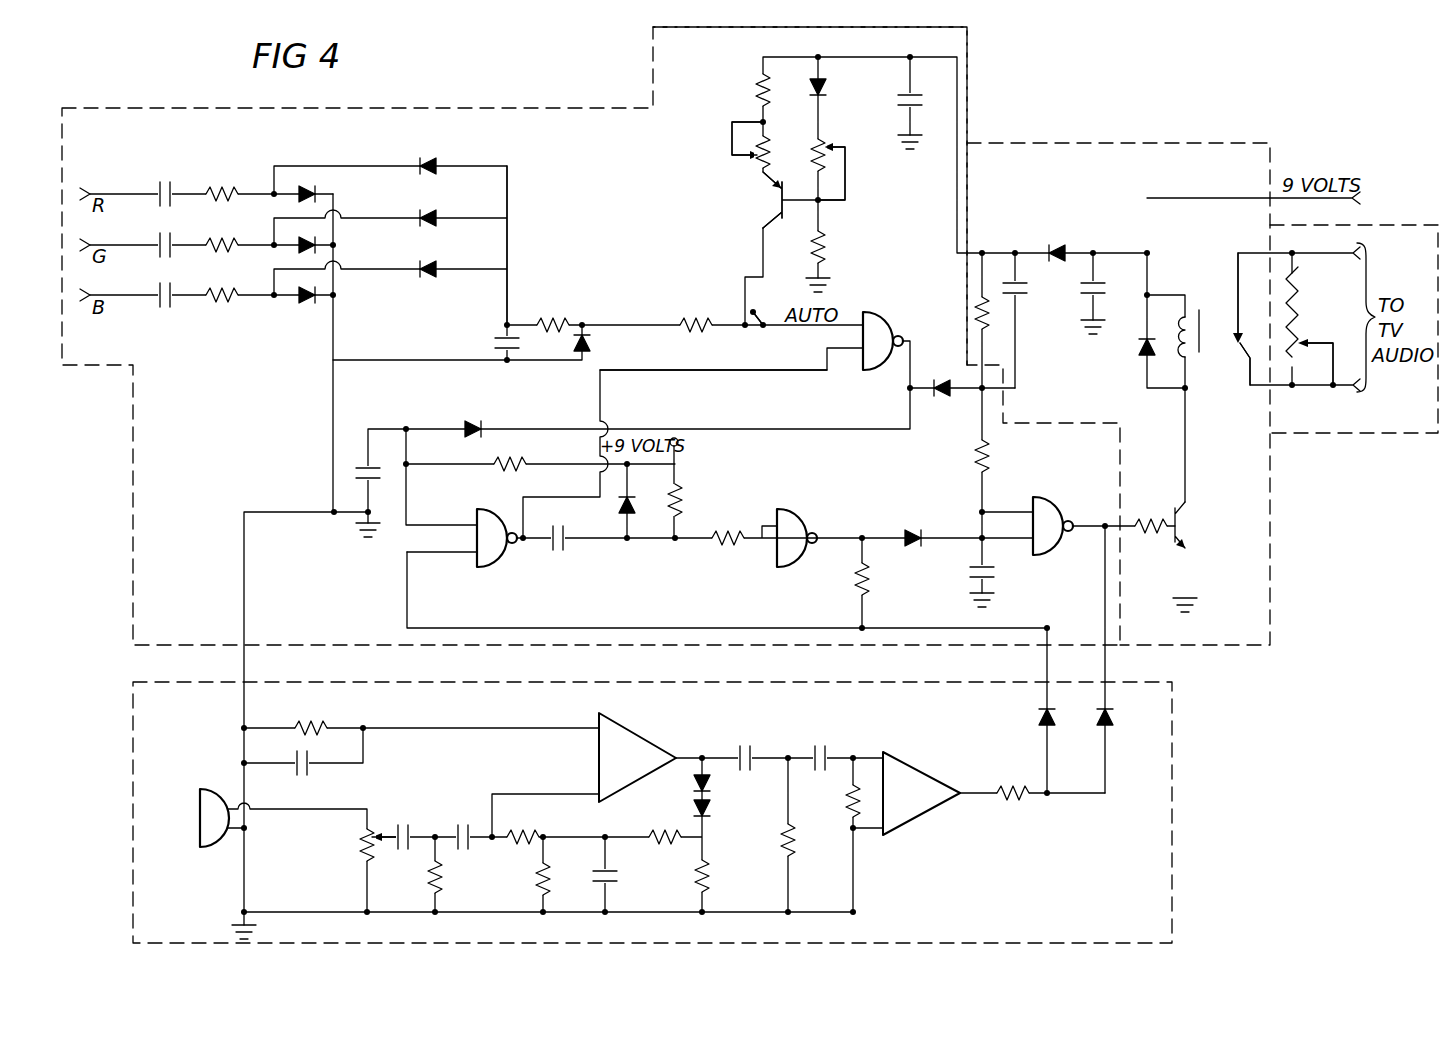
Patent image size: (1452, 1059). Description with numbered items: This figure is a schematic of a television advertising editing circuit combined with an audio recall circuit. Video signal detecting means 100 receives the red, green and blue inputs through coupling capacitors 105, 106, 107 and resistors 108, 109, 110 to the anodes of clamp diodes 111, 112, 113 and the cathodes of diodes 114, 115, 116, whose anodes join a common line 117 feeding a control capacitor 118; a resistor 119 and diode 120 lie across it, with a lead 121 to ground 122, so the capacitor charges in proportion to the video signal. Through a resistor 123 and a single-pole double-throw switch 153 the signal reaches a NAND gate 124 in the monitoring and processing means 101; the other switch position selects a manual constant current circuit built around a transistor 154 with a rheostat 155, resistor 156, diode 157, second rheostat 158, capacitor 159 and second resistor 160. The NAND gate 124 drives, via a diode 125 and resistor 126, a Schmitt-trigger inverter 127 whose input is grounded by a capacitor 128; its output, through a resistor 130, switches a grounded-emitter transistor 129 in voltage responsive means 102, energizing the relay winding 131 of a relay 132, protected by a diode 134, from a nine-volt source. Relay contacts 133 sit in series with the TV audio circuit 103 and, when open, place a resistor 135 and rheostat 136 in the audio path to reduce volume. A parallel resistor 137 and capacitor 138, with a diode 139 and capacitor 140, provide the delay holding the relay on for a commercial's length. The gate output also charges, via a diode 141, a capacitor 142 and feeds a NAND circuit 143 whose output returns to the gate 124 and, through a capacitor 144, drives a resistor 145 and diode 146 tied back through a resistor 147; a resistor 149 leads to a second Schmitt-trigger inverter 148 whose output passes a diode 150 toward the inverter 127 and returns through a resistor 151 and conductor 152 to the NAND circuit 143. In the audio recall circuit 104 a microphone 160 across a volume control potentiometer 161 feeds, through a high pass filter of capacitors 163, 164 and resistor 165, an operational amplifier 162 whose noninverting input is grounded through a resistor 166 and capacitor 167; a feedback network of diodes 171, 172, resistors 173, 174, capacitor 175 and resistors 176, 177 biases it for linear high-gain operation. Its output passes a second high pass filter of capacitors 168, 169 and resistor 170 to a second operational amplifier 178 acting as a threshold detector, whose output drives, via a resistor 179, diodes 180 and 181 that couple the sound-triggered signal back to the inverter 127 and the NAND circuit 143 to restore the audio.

The video signal detecting means 100 is at (452, 108).
The video signal monitoring and signal processing means 101 is at (968, 60).
The voltage responsive means 102 is at (1180, 140).
The TV audio circuit 103 is at (1322, 436).
The audio recall circuit 104 is at (1172, 785).
The coupling capacitor 105 is at (165, 180).
The coupling capacitor 106 is at (205, 225).
The coupling capacitor 107 is at (170, 290).
The resistor 108 is at (236, 183).
The resistor 109 is at (233, 240).
The resistor 110 is at (237, 302).
The diode 111 is at (308, 193).
The diode 112 is at (312, 243).
The diode 113 is at (312, 293).
The diode 114 is at (425, 166).
The diode 115 is at (425, 218).
The diode 116 is at (425, 269).
The common line 117 is at (510, 244).
The control capacitor 118 is at (500, 342).
The resistor 119 is at (550, 318).
The diode 120 is at (584, 355).
The lead 121 is at (338, 386).
The ground 122 is at (357, 538).
The resistor 123 is at (690, 320).
The NAND gate 124 is at (868, 312).
The diode 125 is at (942, 397).
The resistor 126 is at (975, 453).
The inverter 127 is at (1045, 498).
The capacitor 128 is at (975, 570).
The grounded-emitter transistor 129 is at (1180, 522).
The resistor 130 is at (1153, 535).
The relay winding 131 is at (1203, 351).
The relay 132 is at (1203, 311).
The contacts 133 is at (1231, 333).
The diode 134 is at (1140, 350).
The resistor 135 is at (1298, 290).
The rheostat 136 is at (1298, 338).
The resistor 137 is at (975, 312).
The capacitor 138 is at (1022, 295).
The diode 139 is at (1072, 225).
The capacitor 140 is at (1098, 285).
The diode 141 is at (474, 420).
The capacitor 142 is at (362, 465).
The NAND circuit 143 is at (477, 510).
The capacitor 144 is at (560, 548).
The resistor 145 is at (680, 480).
The diode 146 is at (628, 500).
The resistor 147 is at (518, 470).
The inverter 148 is at (797, 515).
The resistor 149 is at (722, 530).
The diode 150 is at (905, 535).
The resistor 151 is at (856, 578).
The conductor 152 is at (630, 632).
The single-pole double throw switch 153 is at (748, 308).
The transistor 154 is at (777, 208).
The rheostat 155 is at (765, 135).
The resistor 156 is at (758, 87).
The diode 157 is at (826, 86).
The second rheostat 158 is at (826, 140).
The capacitor 159 is at (918, 97).
The microphone 160 is at (826, 240).
The volume control potentiometer 161 is at (362, 836).
The operational amplifier 162 is at (645, 745).
The first capacitor 163 is at (400, 825).
The second capacitor 164 is at (468, 815).
The resistor 165 is at (443, 876).
The resistor 166 is at (328, 722).
The capacitor 167 is at (298, 777).
The capacitor 168 is at (750, 752).
The capacitor 169 is at (833, 752).
The resistor 170 is at (798, 852).
The diode 171 is at (710, 785).
The diode 172 is at (710, 810).
The resistor 173 is at (710, 878).
The resistor 174 is at (663, 830).
The capacitor 175 is at (612, 885).
The resistor 176 is at (545, 862).
The resistor 177 is at (520, 830).
The second operational amplifier 178 is at (920, 775).
The resistor 179 is at (1000, 802).
The diode 180 is at (1114, 722).
The diode 181 is at (1040, 722).